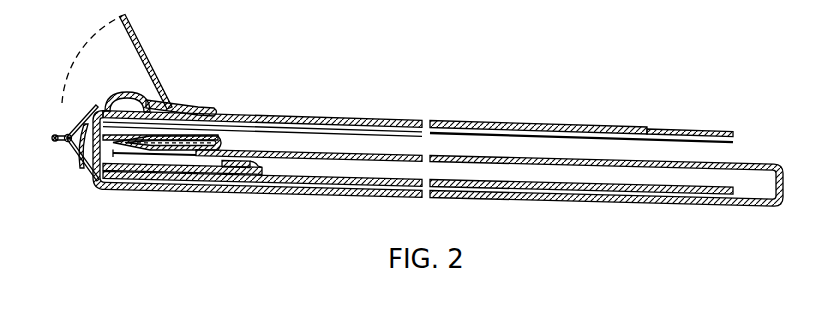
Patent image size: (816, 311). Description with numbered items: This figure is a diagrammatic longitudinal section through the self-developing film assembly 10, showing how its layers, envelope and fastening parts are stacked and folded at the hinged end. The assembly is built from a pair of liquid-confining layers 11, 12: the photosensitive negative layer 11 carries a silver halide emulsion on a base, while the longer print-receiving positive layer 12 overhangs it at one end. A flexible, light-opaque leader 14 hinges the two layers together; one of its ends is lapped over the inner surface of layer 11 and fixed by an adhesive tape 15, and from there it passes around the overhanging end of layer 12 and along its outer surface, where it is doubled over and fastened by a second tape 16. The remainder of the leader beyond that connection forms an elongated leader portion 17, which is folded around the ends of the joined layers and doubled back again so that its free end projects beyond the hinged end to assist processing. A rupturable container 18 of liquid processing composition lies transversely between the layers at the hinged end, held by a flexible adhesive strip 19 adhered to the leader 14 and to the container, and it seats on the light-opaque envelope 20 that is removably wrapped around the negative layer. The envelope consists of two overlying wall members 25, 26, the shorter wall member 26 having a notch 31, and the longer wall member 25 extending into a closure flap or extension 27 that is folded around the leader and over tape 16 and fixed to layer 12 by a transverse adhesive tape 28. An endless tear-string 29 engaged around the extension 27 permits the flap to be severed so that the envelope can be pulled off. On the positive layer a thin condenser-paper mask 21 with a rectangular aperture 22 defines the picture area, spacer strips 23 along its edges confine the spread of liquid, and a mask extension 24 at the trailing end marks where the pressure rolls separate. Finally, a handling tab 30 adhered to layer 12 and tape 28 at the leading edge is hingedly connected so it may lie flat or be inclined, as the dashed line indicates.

The film assembly 10 is at (395, 121).
The liquid-confining layer 11 is at (548, 178).
The liquid-confining layer 12 is at (418, 105).
The leader 14 is at (222, 172).
The adhesive strip or tape 15 is at (270, 167).
The adhesive strip or tape 16 is at (123, 98).
The leader portion 17 is at (170, 178).
The rupturable container 18 is at (212, 141).
The flexible adhesive strip 19 is at (86, 180).
The light-opaque envelope 20 is at (489, 186).
The mask 21 is at (262, 120).
The rectangular aperture 22 is at (516, 131).
The spacer strips 23 is at (357, 137).
The extension 24 is at (688, 133).
The wall member 25 is at (681, 197).
The wall member 26 is at (593, 160).
The closure flap or extension 27 is at (70, 98).
The adhesive strip or tape 28 is at (145, 95).
The endless tear-string 29 is at (51, 137).
The tab member 30 is at (134, 33).
The notch 31 is at (128, 157).